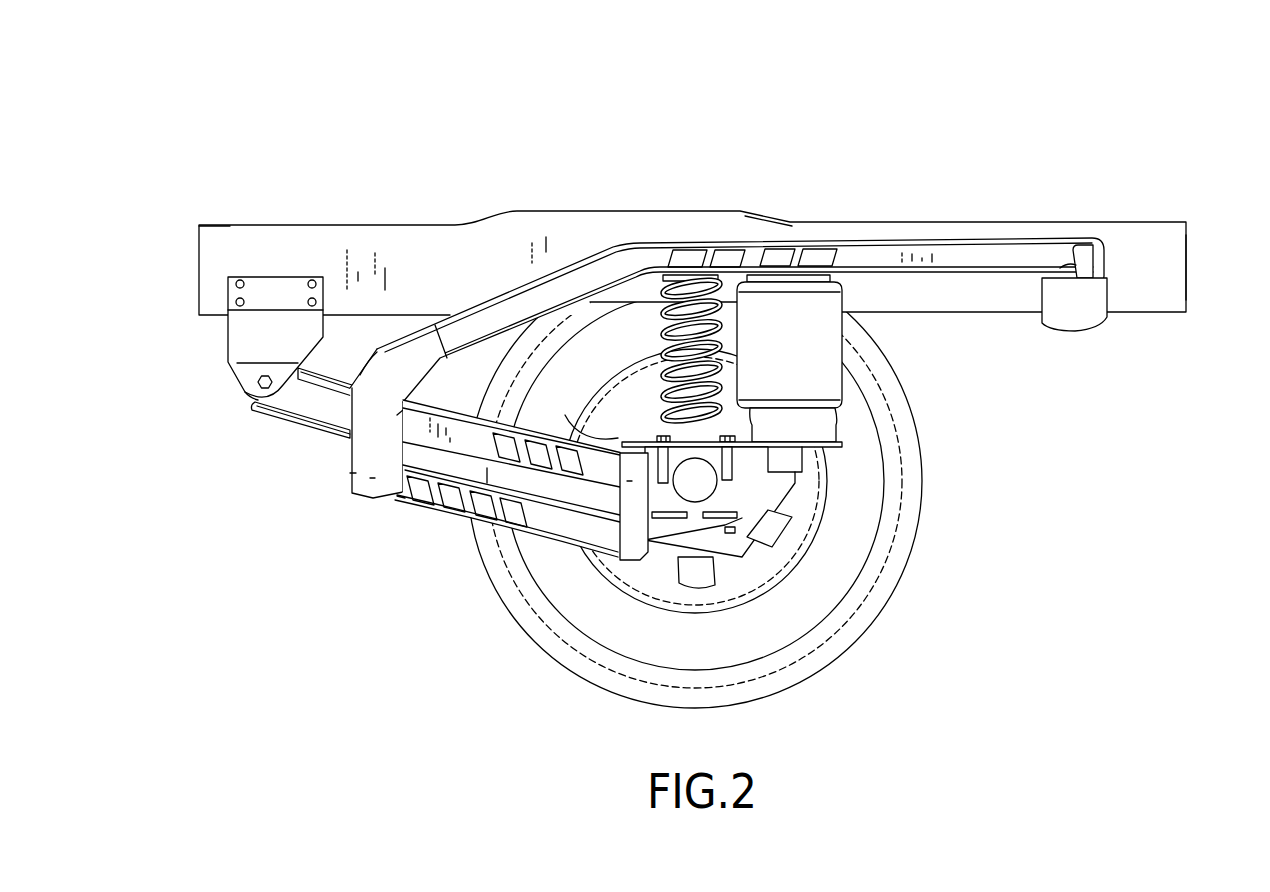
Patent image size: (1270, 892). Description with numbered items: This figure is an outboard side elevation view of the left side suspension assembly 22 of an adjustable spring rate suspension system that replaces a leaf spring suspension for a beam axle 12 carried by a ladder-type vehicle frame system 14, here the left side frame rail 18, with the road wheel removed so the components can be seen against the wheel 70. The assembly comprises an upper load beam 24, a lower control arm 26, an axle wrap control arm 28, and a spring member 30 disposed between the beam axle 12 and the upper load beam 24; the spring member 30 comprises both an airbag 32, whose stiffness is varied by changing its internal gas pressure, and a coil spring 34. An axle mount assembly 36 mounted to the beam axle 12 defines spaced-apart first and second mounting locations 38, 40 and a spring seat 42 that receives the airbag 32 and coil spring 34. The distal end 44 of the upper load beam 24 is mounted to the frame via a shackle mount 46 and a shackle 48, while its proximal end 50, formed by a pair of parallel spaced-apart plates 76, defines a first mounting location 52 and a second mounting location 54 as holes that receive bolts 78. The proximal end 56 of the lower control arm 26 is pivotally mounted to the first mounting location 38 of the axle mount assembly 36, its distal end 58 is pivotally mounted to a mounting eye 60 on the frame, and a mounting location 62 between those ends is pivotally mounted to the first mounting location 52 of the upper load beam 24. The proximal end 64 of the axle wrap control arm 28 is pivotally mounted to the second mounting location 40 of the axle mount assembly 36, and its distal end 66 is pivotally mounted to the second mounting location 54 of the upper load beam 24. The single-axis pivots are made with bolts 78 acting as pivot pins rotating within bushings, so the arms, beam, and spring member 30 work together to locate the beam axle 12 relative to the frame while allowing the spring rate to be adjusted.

The beam axle 12 is at (722, 478).
The vehicle frame system 14 is at (1194, 260).
The left side frame rail 18 is at (1140, 222).
The left side suspension assembly 22 is at (226, 153).
The upper load beam 24 is at (960, 240).
The lower control arm 26 is at (283, 418).
The axle wrap control arm 28 is at (424, 510).
The spring member 30 is at (852, 380).
The airbag 32 is at (842, 406).
The coil spring 34 is at (660, 318).
The axle mount assembly 36 is at (797, 497).
The first mounting location 38 is at (627, 481).
The second mounting location 40 is at (680, 552).
The spring seat 42 is at (845, 444).
The distal end 44 is at (1043, 240).
The shackle mount 46 is at (1100, 328).
The shackle 48 is at (1070, 260).
The proximal end 50 is at (350, 448).
The first mounting location 52 is at (373, 368).
The second mounting location 54 is at (368, 480).
The proximal end 56 is at (595, 437).
The distal end 58 is at (247, 395).
The mounting eye 60 is at (228, 333).
The mounting location 62 is at (397, 418).
The proximal end 64 is at (632, 551).
The distal end 66 is at (403, 502).
The right road wheel 70 is at (908, 553).
The plates 76 is at (350, 473).
The bolts 78 is at (258, 382).